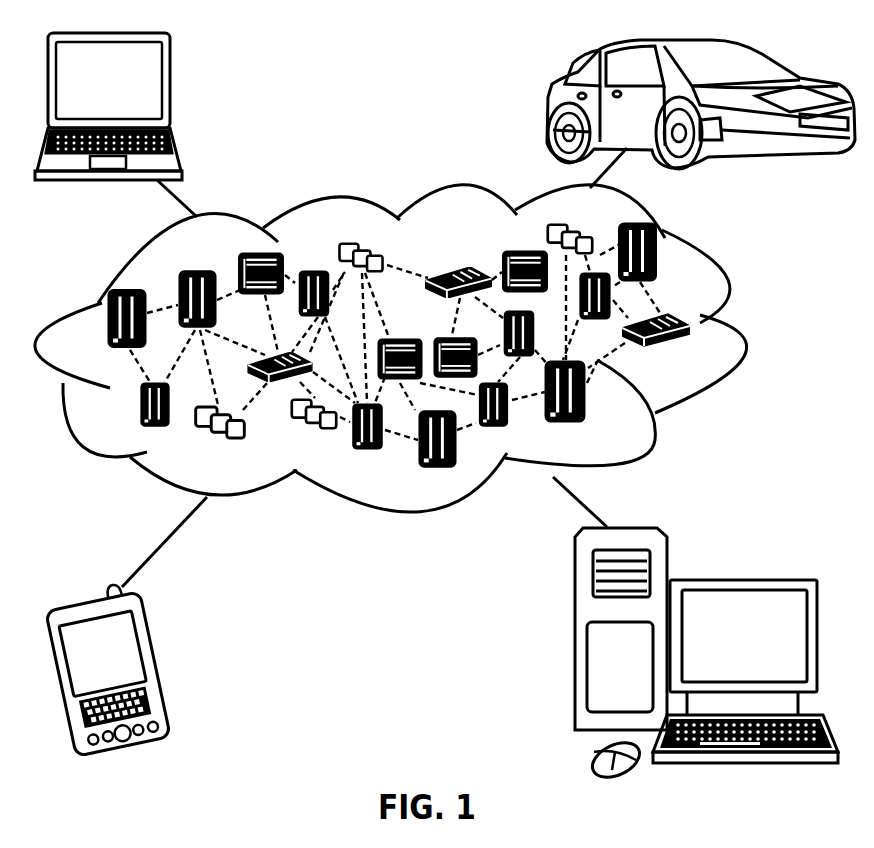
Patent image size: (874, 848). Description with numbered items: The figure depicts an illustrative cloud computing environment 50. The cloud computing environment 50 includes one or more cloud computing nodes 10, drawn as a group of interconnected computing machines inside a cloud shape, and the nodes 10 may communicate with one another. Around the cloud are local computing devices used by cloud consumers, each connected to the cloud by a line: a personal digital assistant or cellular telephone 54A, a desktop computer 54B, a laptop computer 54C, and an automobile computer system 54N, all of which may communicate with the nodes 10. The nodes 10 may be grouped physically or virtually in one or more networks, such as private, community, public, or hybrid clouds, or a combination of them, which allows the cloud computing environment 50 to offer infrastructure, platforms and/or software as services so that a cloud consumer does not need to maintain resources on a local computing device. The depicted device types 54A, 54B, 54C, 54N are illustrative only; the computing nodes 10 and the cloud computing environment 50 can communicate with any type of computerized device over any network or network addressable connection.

The cloud computing nodes 10 is at (412, 348).
The cloud computing environment 50 is at (743, 327).
The personal digital assistant (PDA) or cellular telephone 54A is at (163, 663).
The desktop computer 54B is at (740, 580).
The laptop computer 54C is at (170, 91).
The automobile computer system 54N is at (555, 101).